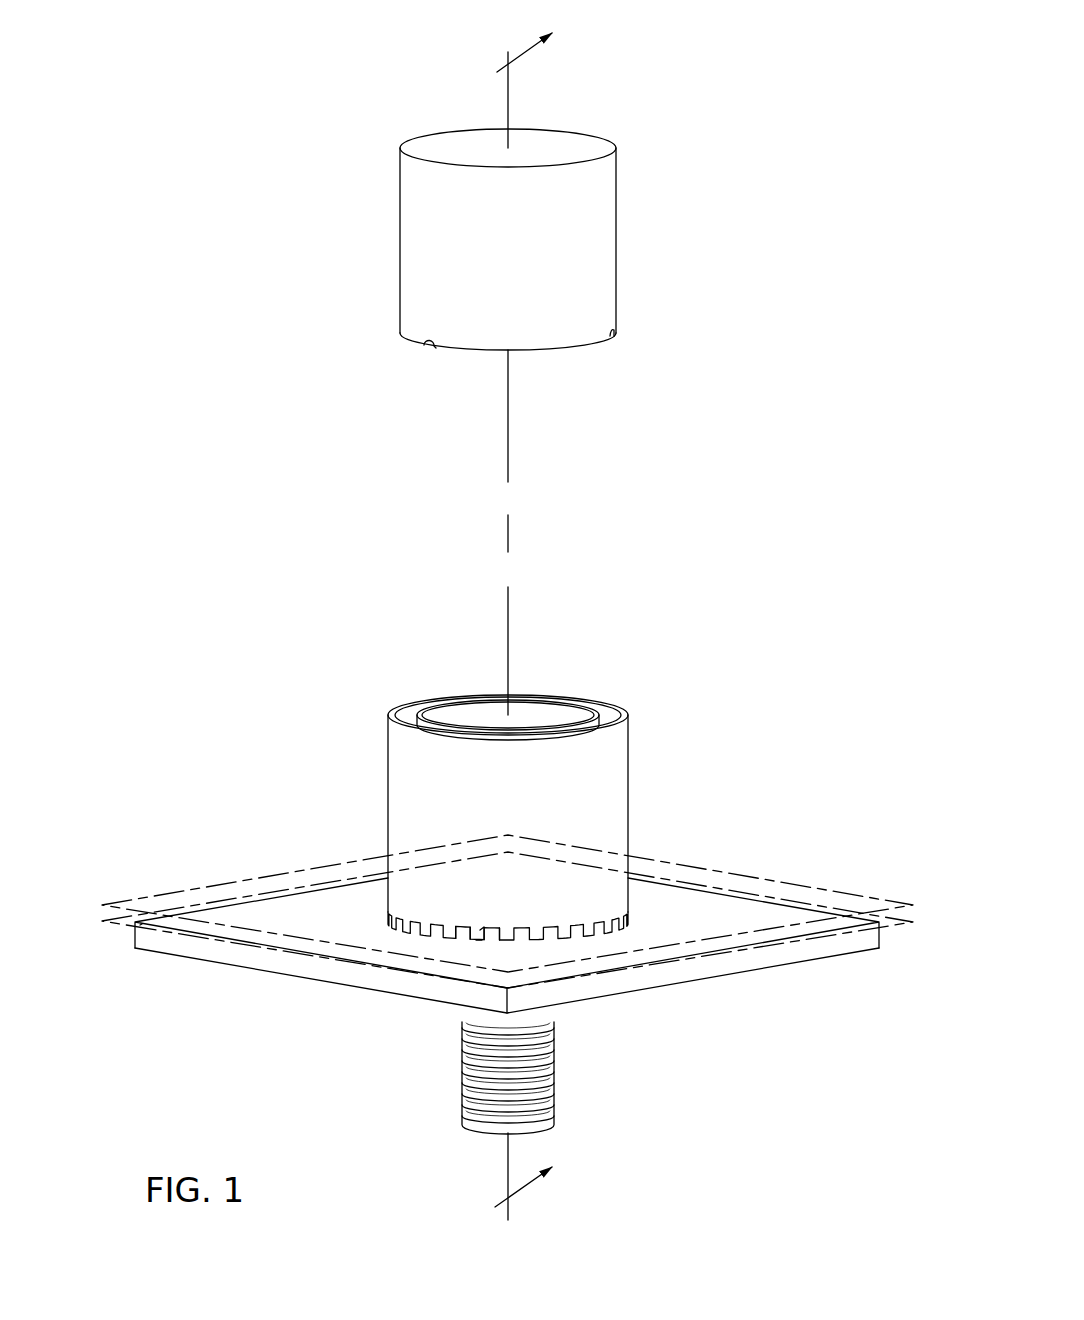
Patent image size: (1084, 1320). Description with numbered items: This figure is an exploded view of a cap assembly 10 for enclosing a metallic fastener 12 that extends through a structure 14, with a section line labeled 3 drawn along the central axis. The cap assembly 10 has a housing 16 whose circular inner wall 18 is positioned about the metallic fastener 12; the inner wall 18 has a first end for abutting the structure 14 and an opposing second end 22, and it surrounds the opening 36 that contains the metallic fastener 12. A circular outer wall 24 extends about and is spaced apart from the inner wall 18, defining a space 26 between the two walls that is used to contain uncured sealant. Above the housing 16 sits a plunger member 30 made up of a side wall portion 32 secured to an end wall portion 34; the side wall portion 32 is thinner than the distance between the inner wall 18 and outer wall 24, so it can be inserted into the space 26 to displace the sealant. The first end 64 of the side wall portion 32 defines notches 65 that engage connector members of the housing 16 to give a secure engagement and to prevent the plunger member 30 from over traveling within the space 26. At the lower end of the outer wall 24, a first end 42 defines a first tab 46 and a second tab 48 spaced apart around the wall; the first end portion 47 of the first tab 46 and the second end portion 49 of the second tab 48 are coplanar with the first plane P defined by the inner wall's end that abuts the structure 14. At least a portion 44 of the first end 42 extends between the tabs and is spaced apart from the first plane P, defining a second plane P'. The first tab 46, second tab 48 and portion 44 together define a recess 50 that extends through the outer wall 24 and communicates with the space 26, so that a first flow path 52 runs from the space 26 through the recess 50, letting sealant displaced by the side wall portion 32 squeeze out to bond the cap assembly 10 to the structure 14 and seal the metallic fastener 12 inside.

The cap assembly 10 is at (286, 98).
The metallic fastener 12 is at (468, 1078).
The structure 14 is at (493, 950).
The housing 16 is at (562, 818).
The inner wall 18 is at (540, 704).
The second end 22 is at (582, 708).
The outer wall 24 is at (387, 742).
The space 26 is at (400, 704).
The plunger member 30 is at (551, 248).
The side wall portion 32 is at (583, 292).
The end wall portion 34 is at (566, 150).
The opening 36 is at (462, 700).
The first end 42 is at (583, 940).
The portion of first end 44 is at (432, 930).
The first tab 46 is at (462, 924).
The first end portion 47 is at (468, 945).
The second tab 48 is at (495, 947).
The second end portion 49 is at (482, 944).
The recess 50 is at (478, 956).
The first flow path 52 is at (478, 932).
The first end of side wall portion 64 is at (574, 348).
The notches 65 is at (428, 356).
The section line 3- 3 is at (542, 608).
The first plane P is at (493, 961).
The second plane P' is at (507, 898).